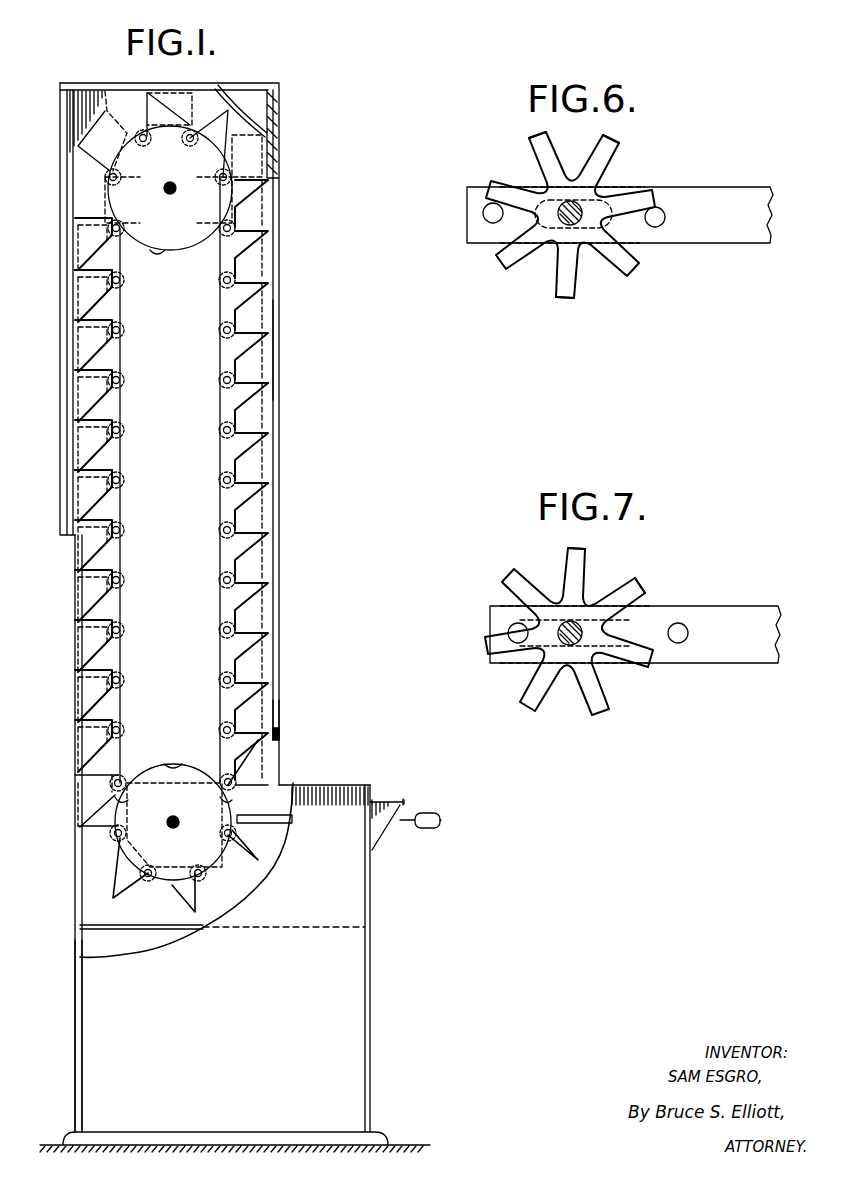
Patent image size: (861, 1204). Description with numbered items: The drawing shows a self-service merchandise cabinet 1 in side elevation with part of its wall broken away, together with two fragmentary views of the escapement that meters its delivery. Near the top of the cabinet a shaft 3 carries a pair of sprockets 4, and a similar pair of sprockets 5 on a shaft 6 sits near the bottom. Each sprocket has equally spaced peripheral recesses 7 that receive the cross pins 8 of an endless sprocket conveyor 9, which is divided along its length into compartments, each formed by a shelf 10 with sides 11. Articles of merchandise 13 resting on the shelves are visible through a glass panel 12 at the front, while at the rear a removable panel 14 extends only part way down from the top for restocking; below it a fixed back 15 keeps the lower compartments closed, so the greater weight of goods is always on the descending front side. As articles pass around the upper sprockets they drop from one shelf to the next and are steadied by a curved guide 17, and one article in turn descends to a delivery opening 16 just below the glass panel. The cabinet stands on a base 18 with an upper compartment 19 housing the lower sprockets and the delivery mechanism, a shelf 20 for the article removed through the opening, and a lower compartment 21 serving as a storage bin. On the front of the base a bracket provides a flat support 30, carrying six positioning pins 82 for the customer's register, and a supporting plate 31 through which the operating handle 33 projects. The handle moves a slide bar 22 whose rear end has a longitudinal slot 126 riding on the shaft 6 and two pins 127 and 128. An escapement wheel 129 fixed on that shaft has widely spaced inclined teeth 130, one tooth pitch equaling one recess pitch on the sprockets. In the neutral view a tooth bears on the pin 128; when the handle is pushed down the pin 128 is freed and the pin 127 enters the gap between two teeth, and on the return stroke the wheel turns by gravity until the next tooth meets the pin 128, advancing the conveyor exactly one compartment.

In FIG. 1, the cabinet 1 is at (279, 168).
In FIG. 1, the shaft 3 is at (164, 191).
In FIG. 1, the sprockets 4 is at (186, 240).
In FIG. 1, the sprockets 5 is at (187, 780).
In FIG. 1, the shaft 6 is at (173, 817).
In FIG. 6, the shaft 6 is at (566, 228).
In FIG. 7, the shaft 6 is at (573, 647).
In FIG. 1, the peripheral recesses 7 is at (219, 178).
In FIG. 1, the cross pins 8 is at (147, 141).
In FIG. 1, the endless sprocket conveyor 9 is at (120, 405).
In FIG. 1, the shelf 10 is at (265, 393).
In FIG. 1, the sides 11 is at (100, 360).
In FIG. 1, the glass panel 12 is at (273, 358).
In FIG. 1, the articles of merchandise 13 is at (105, 93).
In FIG. 1, the removable panel 14 is at (63, 272).
In FIG. 1, the fixed back 15 is at (75, 635).
In FIG. 1, the delivery opening 16 is at (270, 765).
In FIG. 1, the curved guide 17 is at (250, 110).
In FIG. 1, the base 18 is at (372, 1033).
In FIG. 1, the upper compartment 19 is at (85, 877).
In FIG. 1, the shelf 20 is at (327, 785).
In FIG. 1, the lower compartment 21 is at (107, 947).
In FIG. 1, the slide bar 22 is at (258, 824).
In FIG. 6, the slide bar 22 is at (728, 238).
In FIG. 7, the slide bar 22 is at (722, 658).
In FIG. 1, the flat support 30 is at (395, 802).
In FIG. 1, the supporting plate 31 is at (384, 838).
In FIG. 1, the operating handle 33 is at (428, 827).
In FIG. 1, the positioning pins 82 is at (373, 800).
In FIG. 6, the longitudinal slot 126 is at (617, 190).
In FIG. 7, the longitudinal slot 126 is at (638, 623).
In FIG. 6, the pin 127 is at (486, 214).
In FIG. 7, the pin 127 is at (512, 623).
In FIG. 6, the pin 128 is at (657, 228).
In FIG. 7, the pin 128 is at (688, 628).
In FIG. 6, the escapement wheel 129 is at (548, 190).
In FIG. 7, the escapement wheel 129 is at (548, 612).
In FIG. 6, the inclined teeth 130 is at (543, 143).
In FIG. 7, the inclined teeth 130 is at (592, 597).